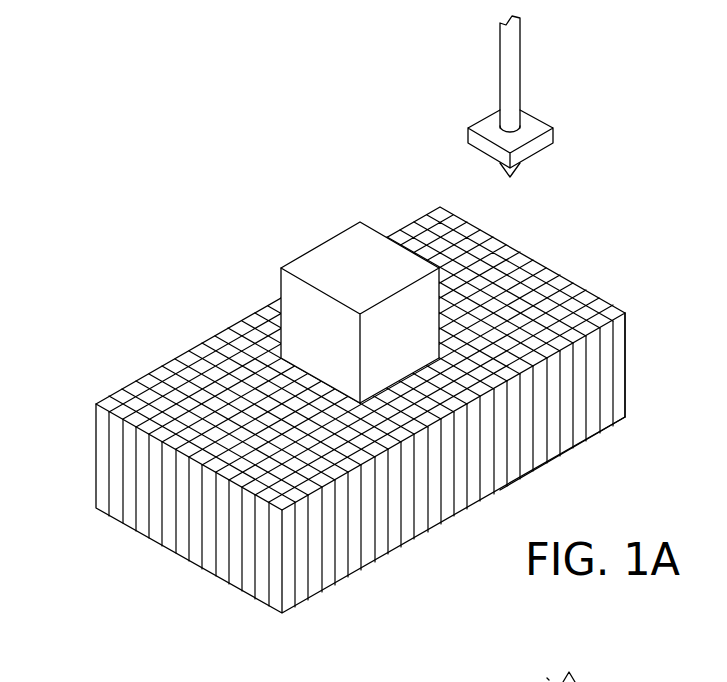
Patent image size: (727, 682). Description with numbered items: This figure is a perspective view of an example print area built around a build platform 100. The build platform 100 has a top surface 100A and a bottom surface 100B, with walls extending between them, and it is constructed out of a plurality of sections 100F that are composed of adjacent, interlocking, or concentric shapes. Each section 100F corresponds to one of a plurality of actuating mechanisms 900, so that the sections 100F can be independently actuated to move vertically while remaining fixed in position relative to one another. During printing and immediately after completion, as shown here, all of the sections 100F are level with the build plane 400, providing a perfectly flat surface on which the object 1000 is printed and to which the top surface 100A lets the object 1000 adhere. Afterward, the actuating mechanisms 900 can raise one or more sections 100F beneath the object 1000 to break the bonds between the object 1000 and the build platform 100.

The build platform 100 is at (52, 440).
The top surface 100A is at (130, 385).
The bottom surface 100B is at (245, 591).
The sections 100F is at (384, 450).
The build plane 400 is at (625, 313).
The actuating mechanisms 900 is at (583, 447).
The 3D-printed object 1000 is at (322, 243).